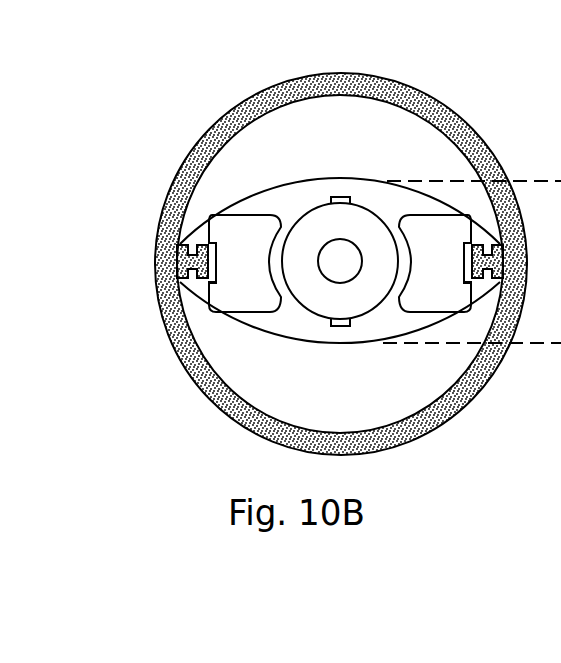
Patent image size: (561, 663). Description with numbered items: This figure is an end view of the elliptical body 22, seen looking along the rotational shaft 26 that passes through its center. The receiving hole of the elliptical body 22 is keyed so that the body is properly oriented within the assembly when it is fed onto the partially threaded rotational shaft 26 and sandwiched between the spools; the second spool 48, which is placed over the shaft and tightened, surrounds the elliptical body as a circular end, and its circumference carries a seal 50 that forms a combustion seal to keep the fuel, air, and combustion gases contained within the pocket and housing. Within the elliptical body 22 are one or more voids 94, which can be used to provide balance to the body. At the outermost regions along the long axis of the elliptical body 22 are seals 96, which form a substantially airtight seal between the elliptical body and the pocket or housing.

The second spool 48 is at (340, 246).
The seal 50 is at (326, 72).
The elliptical body 22 is at (288, 197).
The rotational shaft 26 is at (340, 215).
The voids 94 is at (245, 246).
The seals 96 is at (488, 250).